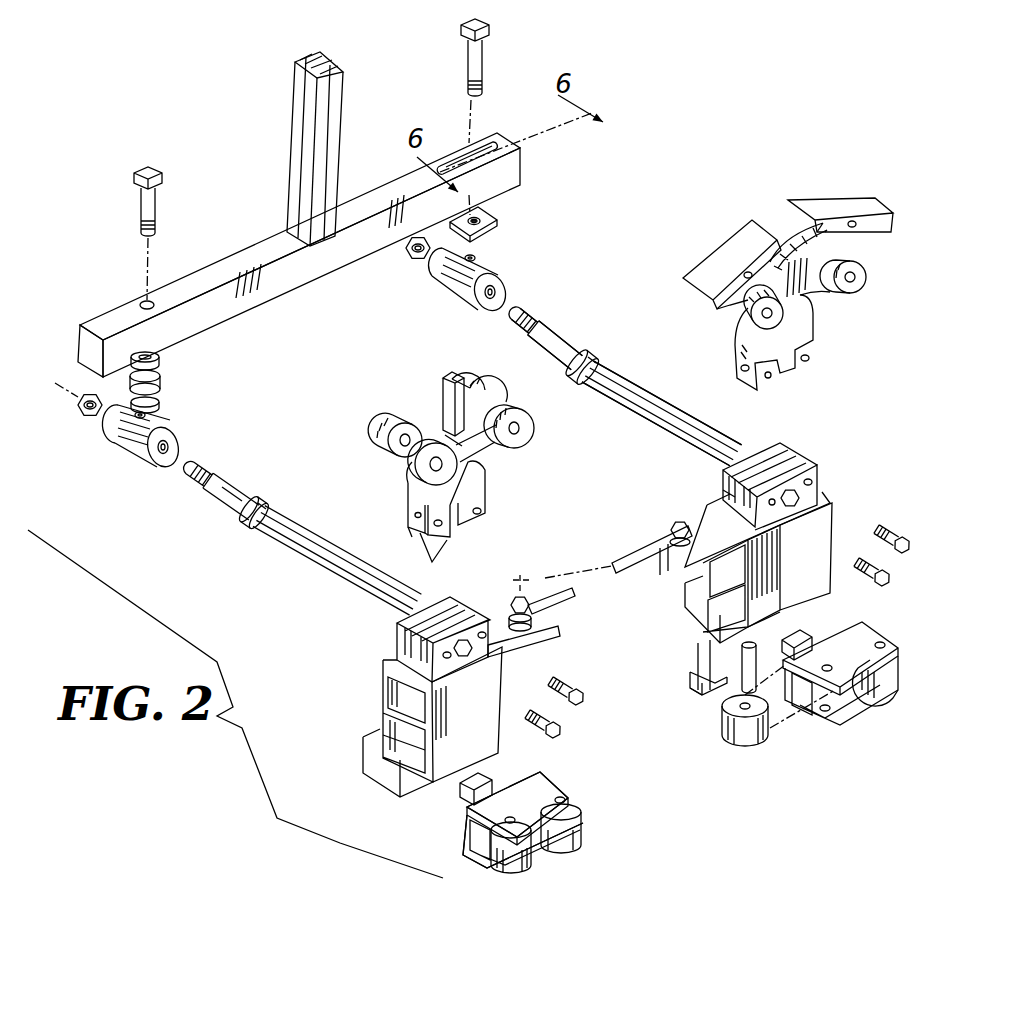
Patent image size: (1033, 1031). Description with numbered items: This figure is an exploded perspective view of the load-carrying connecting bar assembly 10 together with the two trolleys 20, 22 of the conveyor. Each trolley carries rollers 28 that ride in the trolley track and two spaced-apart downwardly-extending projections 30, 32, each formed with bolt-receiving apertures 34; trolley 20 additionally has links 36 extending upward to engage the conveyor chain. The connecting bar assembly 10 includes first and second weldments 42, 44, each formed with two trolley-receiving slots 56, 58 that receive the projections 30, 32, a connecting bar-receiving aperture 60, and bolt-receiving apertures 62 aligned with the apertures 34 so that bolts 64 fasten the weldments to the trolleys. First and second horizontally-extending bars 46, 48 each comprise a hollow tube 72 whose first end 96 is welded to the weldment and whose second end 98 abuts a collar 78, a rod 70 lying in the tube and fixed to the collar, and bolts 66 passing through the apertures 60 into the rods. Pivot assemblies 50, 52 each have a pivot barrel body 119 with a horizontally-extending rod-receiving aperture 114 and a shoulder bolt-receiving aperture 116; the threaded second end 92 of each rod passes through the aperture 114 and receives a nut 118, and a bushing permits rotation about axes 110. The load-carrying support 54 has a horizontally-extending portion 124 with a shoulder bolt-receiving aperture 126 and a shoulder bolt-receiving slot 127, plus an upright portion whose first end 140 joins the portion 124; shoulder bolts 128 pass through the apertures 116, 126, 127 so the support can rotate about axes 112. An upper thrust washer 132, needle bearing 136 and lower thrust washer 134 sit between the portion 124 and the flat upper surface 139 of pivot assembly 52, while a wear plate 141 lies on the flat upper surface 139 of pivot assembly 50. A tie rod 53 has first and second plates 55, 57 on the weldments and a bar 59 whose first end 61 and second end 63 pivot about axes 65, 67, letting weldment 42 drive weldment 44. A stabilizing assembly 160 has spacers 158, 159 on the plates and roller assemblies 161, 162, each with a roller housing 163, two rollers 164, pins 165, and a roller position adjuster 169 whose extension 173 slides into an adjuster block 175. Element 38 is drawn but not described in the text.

The load-carrying connecting bar assembly 10 is at (146, 95).
The trolley 20 is at (788, 265).
The trolley 22 is at (616, 425).
The rollers 28 is at (482, 382).
The downwardly-extending projection 30 is at (487, 507).
The downwardly-extending projection 32 is at (410, 507).
The bolt-receiving apertures 34 is at (847, 388).
The links 36 is at (722, 265).
The clamp assembly 38 is at (586, 603).
The first weldment 42 is at (588, 603).
The second weldment 44 is at (522, 661).
The first horizontally-extending bar 46 is at (642, 372).
The second horizontally-extending bar 48 is at (428, 452).
The pivot assembly 50 is at (319, 382).
The pivot assembly 52 is at (188, 437).
The tie rod 53 is at (600, 564).
The load-carrying support 54 is at (356, 128).
The first plate 55 is at (702, 539).
The trolley-receiving slot 56 is at (790, 462).
The second plate 57 is at (405, 687).
The trolley-receiving slot 58 is at (725, 484).
The bar 59 is at (662, 578).
The connecting bar-receiving aperture 60 is at (463, 657).
The first end 61 is at (655, 560).
The bolt-receiving apertures 62 is at (812, 480).
The second end 63 is at (545, 602).
The bolts 64 is at (583, 700).
The axis 65 is at (678, 507).
The bolts 66 is at (790, 455).
The axis 67 is at (553, 572).
The rod 70 is at (215, 502).
The hollow tube 72 is at (320, 553).
The collar 78 is at (250, 542).
The second end 92 is at (210, 492).
The first end 96 is at (247, 518).
The second end 98 is at (283, 513).
The axes 110 is at (423, 257).
The axes 112 is at (148, 252).
The horizontally-extending rod-receiving aperture 114 is at (319, 382).
The shoulder bolt-receiving aperture 116 is at (480, 222).
The nut 118 is at (407, 245).
The pivot barrel body 119 is at (503, 280).
The horizontally-extending portion 124 is at (375, 190).
The shoulder bolt-receiving aperture 126 is at (142, 302).
The shoulder bolt-receiving slot 127 is at (497, 152).
The shoulder bolts 128 is at (148, 167).
The upper thrust washer 132 is at (160, 360).
The lower thrust washer 134 is at (160, 393).
The needle bearing 136 is at (160, 382).
The flat upper surface 139 is at (463, 260).
The first end 140 is at (290, 230).
The wear plate 141 is at (478, 213).
The spacer 158 is at (790, 612).
The spacer 159 is at (372, 730).
The stabilizing assembly 160 is at (704, 765).
The roller assembly 161 is at (704, 765).
The roller assembly 162 is at (489, 850).
The roller housing 163 is at (870, 637).
The rollers 164 is at (898, 683).
The pins 165 is at (826, 665).
The roller position adjuster 169 is at (682, 698).
The extension 173 is at (470, 793).
The adjuster block 175 is at (370, 782).